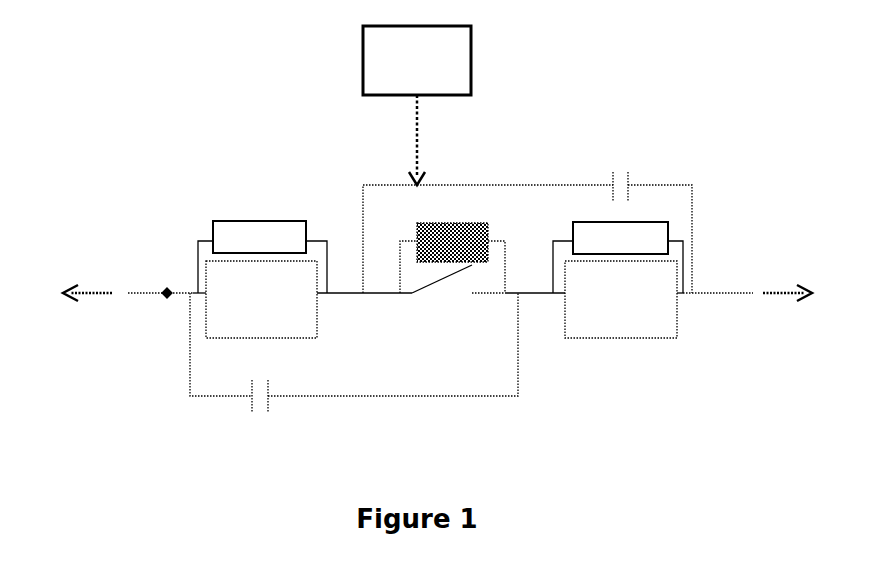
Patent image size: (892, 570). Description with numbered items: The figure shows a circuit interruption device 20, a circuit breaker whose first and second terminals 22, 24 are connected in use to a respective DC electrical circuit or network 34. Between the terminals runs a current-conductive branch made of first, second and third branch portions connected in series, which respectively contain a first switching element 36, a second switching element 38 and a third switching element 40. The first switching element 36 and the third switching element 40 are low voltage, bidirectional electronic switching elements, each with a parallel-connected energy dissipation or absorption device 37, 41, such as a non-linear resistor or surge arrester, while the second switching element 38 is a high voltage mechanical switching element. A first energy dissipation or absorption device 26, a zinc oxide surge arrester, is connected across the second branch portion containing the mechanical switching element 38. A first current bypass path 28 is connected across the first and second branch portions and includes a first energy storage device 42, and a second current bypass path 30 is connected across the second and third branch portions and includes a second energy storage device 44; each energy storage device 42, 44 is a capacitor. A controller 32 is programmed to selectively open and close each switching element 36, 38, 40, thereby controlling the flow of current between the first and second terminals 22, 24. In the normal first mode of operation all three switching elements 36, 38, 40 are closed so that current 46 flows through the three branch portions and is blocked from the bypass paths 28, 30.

The circuit interruption device 20 is at (296, 198).
The first terminal 22 is at (188, 297).
The second terminal 24 is at (695, 287).
The first energy dissipation or absorption device 26 is at (434, 257).
The first current bypass path 28 is at (374, 402).
The second current bypass path 30 is at (560, 178).
The controller 32 is at (399, 74).
The DC electrical circuit or network 34 is at (437, 293).
The first switching element 36 is at (243, 309).
The energy dissipation or absorption device 37 is at (241, 251).
The second switching element 38 is at (488, 292).
The third switching element 40 is at (603, 309).
The energy dissipation or absorption device 41 is at (602, 252).
The first energy storage device 42 is at (262, 413).
The second energy storage device 44 is at (622, 171).
The current 46 is at (162, 277).